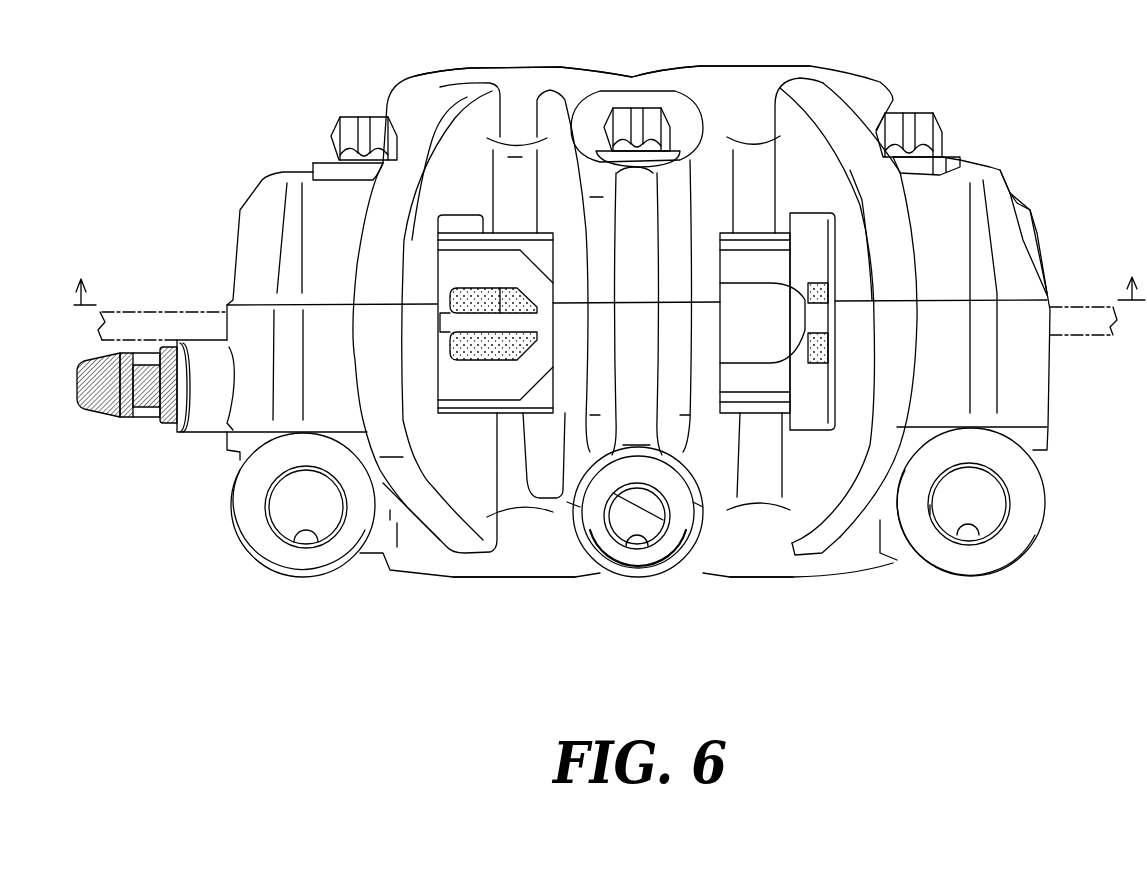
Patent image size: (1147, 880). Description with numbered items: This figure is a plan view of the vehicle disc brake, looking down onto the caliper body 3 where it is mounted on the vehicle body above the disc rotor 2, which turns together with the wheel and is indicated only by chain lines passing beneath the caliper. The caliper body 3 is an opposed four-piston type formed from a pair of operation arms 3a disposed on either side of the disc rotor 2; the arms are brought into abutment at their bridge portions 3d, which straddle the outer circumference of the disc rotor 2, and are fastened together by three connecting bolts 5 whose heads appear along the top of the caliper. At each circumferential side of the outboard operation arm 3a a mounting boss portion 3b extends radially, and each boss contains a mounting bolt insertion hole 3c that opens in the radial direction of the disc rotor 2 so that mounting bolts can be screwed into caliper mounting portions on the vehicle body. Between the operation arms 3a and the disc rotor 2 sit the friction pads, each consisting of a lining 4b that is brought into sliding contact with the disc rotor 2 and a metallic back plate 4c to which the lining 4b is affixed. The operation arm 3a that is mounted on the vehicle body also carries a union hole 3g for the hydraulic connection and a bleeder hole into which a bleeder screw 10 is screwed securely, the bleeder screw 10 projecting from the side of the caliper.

The disc rotor 2 is at (1080, 327).
The caliper body 3 is at (852, 62).
The operation arm 3a is at (680, 78).
The mounting boss portion 3b is at (270, 557).
The mounting bolt insertion hole 3c is at (295, 540).
The bridge portion 3d is at (1023, 278).
The union hole 3g is at (625, 547).
The lining 4b is at (457, 300).
The back plate 4c is at (758, 272).
The connecting bolt 5 is at (355, 118).
The bleeder screw 10 is at (150, 413).